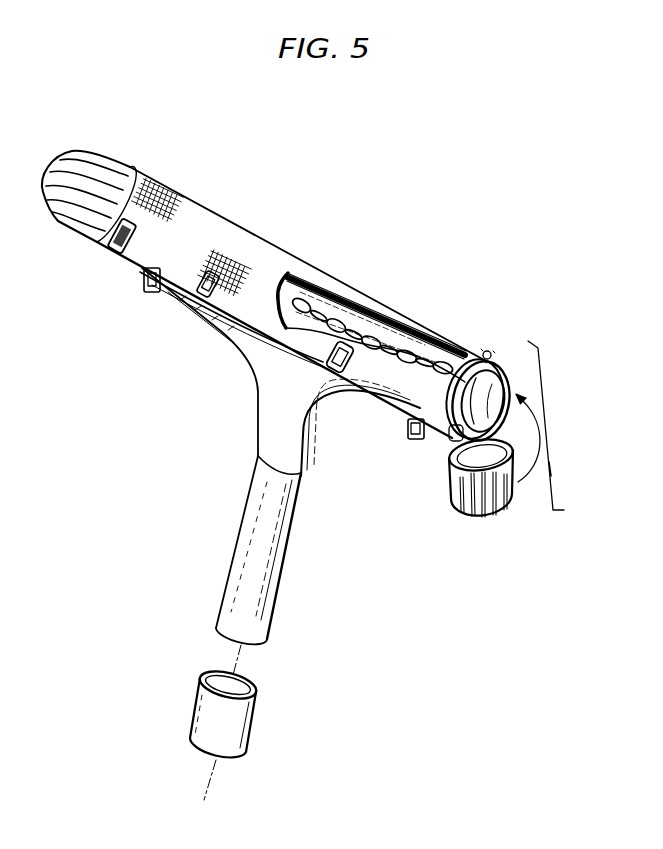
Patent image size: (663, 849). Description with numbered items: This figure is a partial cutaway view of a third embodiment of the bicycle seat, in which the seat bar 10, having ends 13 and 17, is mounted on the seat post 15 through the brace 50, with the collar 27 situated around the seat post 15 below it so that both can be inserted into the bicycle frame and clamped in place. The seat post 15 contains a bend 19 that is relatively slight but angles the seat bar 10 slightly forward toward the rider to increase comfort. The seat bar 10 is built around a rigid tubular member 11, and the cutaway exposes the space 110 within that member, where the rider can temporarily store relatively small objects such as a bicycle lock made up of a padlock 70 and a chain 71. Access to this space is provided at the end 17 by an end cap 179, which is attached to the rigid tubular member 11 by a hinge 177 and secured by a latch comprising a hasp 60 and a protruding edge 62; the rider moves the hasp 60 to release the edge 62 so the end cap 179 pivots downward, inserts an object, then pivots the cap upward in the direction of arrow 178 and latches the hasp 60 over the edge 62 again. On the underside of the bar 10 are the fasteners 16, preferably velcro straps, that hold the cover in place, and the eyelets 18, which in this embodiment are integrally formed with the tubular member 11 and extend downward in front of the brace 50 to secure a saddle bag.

The seat bar 10 is at (253, 233).
The end 13 is at (90, 153).
The fasteners 16 is at (110, 252).
The eyelets 18 is at (146, 291).
The space 110 is at (400, 308).
The chain 71 is at (366, 322).
The rigid tubular member 11 is at (510, 374).
The hasp 60 is at (486, 351).
The padlock 70 is at (450, 436).
The end 17 is at (549, 429).
The hinge 177 is at (491, 437).
The arrow 178 is at (552, 472).
The end cap 179 is at (468, 520).
The protruding edge 62 is at (482, 456).
The brace 50 is at (250, 367).
The bend 19 is at (258, 453).
The seat post 15 is at (282, 563).
The collar 27 is at (252, 724).